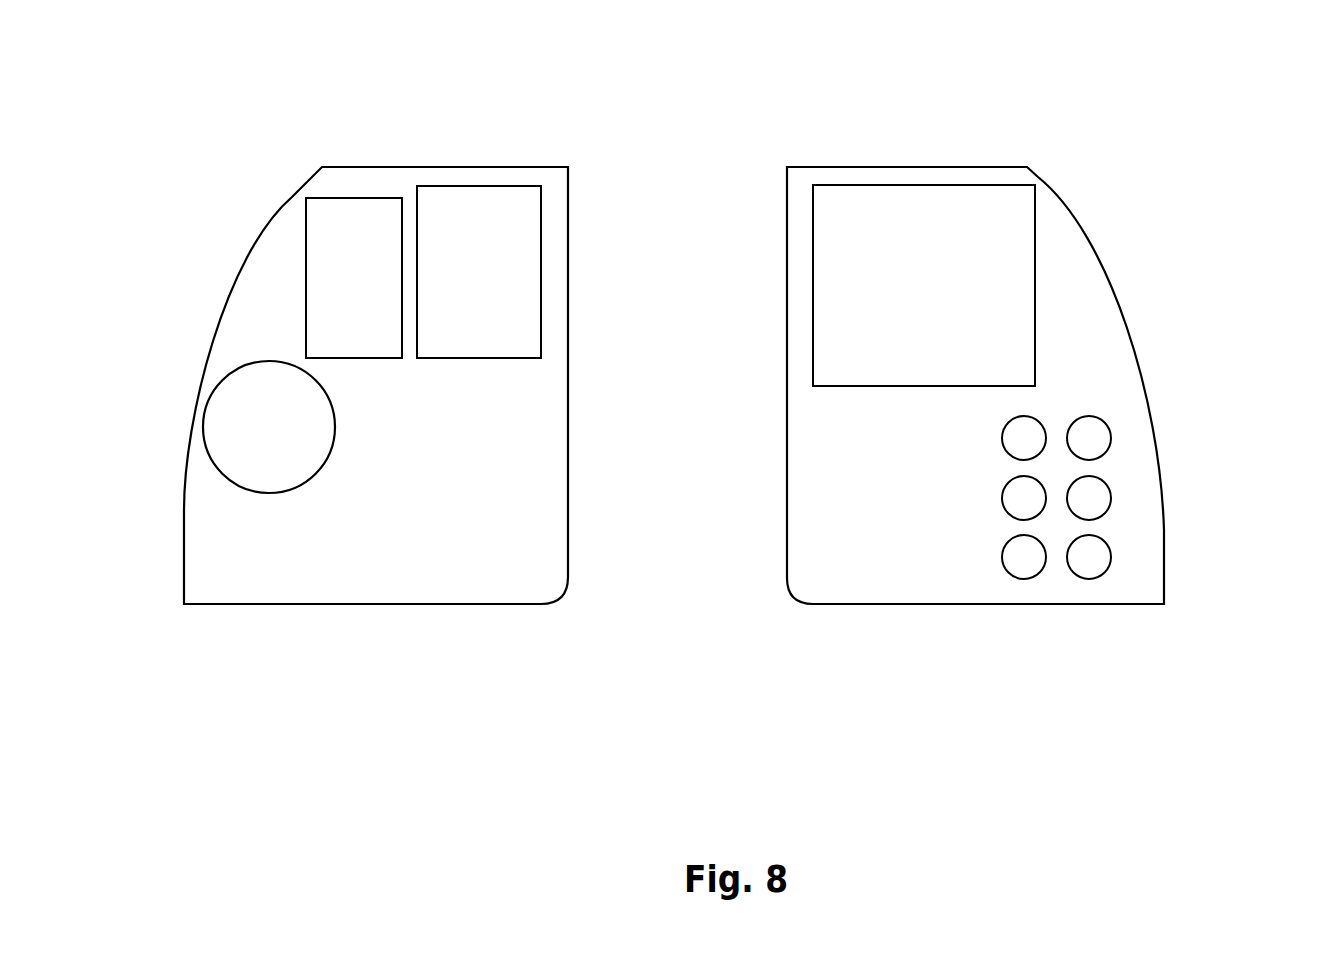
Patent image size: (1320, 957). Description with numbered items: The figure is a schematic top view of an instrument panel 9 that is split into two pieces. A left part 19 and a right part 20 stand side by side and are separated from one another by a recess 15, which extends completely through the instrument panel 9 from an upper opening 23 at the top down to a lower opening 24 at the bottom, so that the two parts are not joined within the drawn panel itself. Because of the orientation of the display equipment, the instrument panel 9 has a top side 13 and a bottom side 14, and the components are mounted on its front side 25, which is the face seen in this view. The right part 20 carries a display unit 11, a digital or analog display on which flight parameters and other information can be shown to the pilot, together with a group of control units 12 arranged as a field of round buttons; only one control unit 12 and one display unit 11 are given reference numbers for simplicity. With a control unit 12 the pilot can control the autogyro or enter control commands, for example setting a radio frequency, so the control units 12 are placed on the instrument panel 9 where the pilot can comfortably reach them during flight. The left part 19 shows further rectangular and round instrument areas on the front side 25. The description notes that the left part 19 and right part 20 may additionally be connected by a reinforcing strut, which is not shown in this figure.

The instrument panel 9 is at (268, 129).
The display unit 11 is at (893, 250).
The control unit 12 is at (1088, 435).
The top side 13 is at (447, 167).
The bottom side 14 is at (423, 604).
The recess 15 is at (678, 305).
The left part 19 is at (378, 503).
The right part 20 is at (946, 475).
The upper opening 23 is at (663, 172).
The lower opening 24 is at (671, 598).
The front side 25 is at (816, 568).